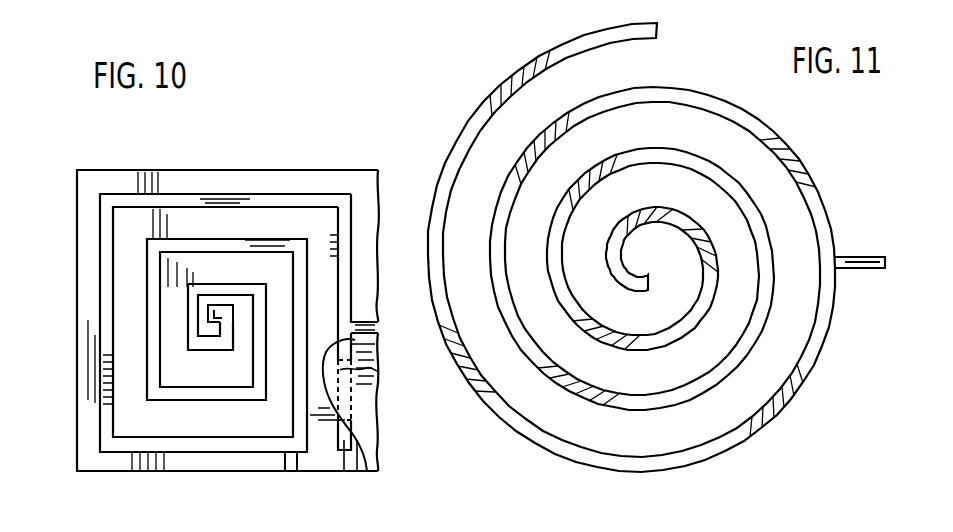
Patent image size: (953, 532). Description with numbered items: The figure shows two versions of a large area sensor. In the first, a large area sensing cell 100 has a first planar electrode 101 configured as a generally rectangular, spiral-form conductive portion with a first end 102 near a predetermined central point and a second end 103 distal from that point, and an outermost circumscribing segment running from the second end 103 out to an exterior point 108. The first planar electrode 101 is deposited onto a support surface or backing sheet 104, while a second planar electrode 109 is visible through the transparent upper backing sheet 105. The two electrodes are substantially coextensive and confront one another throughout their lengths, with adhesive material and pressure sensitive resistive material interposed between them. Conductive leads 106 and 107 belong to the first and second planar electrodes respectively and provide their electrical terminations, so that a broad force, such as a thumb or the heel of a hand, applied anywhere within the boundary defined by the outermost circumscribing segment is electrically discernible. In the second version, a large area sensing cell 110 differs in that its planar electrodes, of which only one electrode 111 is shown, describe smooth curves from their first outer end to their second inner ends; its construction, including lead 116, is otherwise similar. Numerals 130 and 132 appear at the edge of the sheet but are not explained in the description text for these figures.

In FIG. 10, the spiral coil assembly 100 is at (108, 160).
In FIG. 10, the substrate 101 is at (108, 335).
In FIG. 10, the inner terminal pad 102 is at (232, 323).
In FIG. 10, the through connection 103 is at (348, 450).
In FIG. 10, the square spiral conductor 104 is at (246, 468).
In FIG. 10, the contact pad 105 is at (346, 433).
In FIG. 10, the outer terminal 106 is at (361, 323).
In FIG. 10, the hidden conductor portion 107 is at (372, 392).
In FIG. 10, the lead 108 is at (300, 470).
In FIG. 10, the connection region 109 is at (366, 381).
In FIG. 11, the circular spiral coil 110 is at (726, 92).
In FIG. 11, the spiral conductor 111 is at (828, 320).
In FIG. 11, the terminal tab 116 is at (858, 257).
In FIG. 11, the element 130 is at (726, 522).
In FIG. 11, the element 132 is at (675, 522).